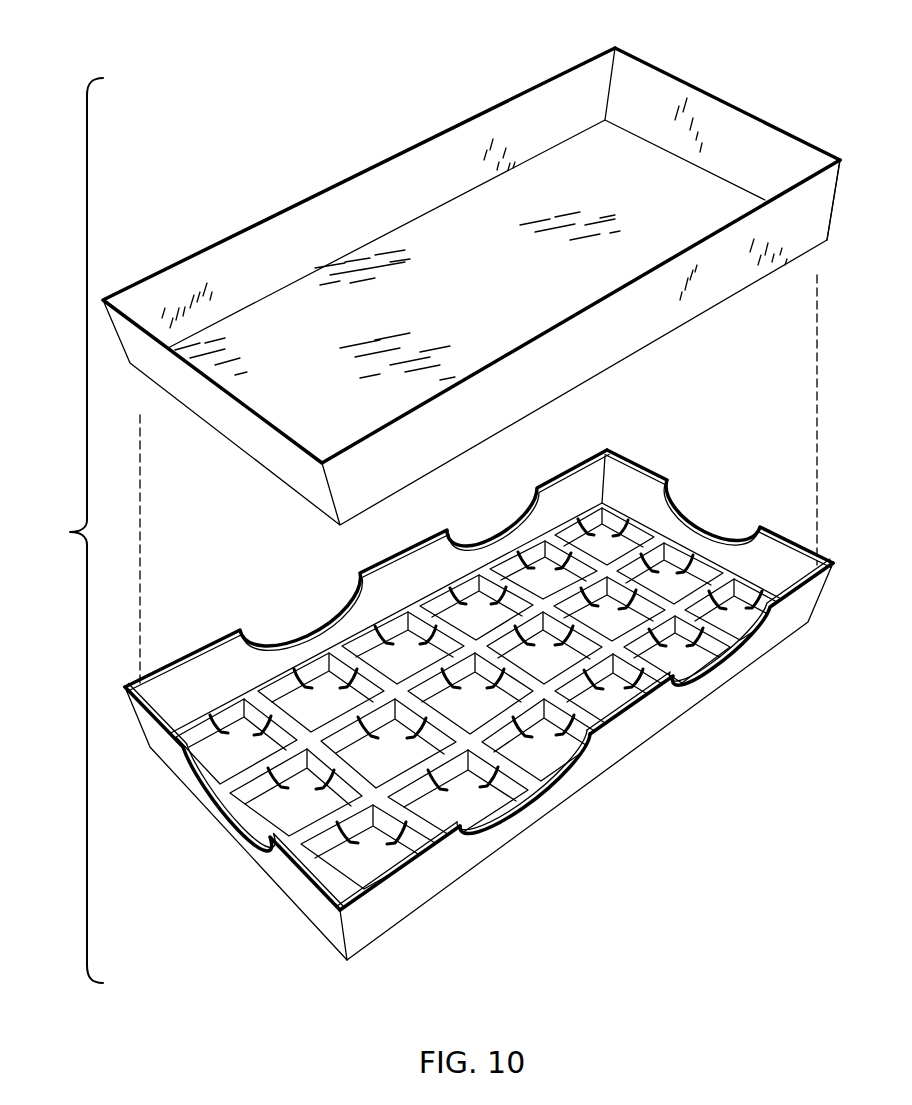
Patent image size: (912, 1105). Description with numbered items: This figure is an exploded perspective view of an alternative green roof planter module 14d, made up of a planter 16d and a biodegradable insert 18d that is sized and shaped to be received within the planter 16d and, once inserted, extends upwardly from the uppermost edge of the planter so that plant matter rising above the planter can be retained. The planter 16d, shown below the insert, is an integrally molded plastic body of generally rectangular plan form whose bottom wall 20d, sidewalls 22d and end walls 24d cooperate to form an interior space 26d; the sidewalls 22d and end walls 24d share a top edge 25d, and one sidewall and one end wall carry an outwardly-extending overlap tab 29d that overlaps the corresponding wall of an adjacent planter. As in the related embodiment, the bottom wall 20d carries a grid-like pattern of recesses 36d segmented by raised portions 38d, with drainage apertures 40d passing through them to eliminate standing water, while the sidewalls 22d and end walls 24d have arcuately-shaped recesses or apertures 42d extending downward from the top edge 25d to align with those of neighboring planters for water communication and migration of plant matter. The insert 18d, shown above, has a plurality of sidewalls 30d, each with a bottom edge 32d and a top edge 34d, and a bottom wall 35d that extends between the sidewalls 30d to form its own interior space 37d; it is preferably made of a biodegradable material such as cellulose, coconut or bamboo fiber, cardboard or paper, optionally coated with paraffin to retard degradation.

The planter module 14d is at (71, 530).
The planter 16d is at (479, 685).
The biodegradable insert 18d is at (200, 233).
The bottom wall 20d is at (550, 527).
The sidewalls 22d is at (590, 757).
The end walls 24d is at (303, 898).
The top edge 25d is at (418, 845).
The interior space 26d is at (641, 476).
The overlap tab 29d is at (400, 583).
The sidewalls 30d is at (743, 143).
The bottom edge 32d is at (652, 143).
The top edge 34d is at (697, 87).
The bottom wall 35d is at (473, 243).
The recesses 36d is at (236, 737).
The interior space 37d is at (775, 154).
The raised portions 38d is at (455, 603).
The drainage apertures 40d is at (473, 573).
The arcuately-shaped apertures 42d is at (562, 783).